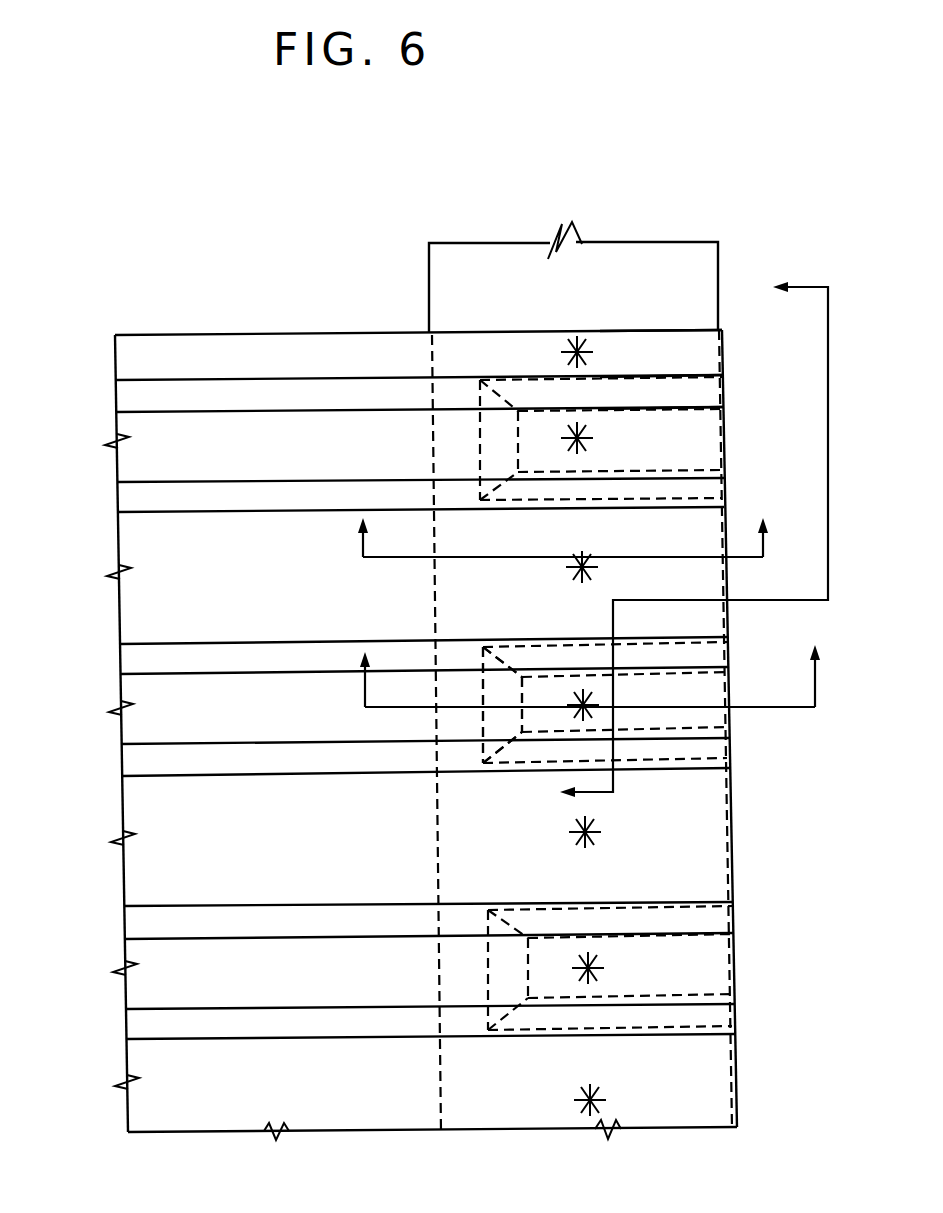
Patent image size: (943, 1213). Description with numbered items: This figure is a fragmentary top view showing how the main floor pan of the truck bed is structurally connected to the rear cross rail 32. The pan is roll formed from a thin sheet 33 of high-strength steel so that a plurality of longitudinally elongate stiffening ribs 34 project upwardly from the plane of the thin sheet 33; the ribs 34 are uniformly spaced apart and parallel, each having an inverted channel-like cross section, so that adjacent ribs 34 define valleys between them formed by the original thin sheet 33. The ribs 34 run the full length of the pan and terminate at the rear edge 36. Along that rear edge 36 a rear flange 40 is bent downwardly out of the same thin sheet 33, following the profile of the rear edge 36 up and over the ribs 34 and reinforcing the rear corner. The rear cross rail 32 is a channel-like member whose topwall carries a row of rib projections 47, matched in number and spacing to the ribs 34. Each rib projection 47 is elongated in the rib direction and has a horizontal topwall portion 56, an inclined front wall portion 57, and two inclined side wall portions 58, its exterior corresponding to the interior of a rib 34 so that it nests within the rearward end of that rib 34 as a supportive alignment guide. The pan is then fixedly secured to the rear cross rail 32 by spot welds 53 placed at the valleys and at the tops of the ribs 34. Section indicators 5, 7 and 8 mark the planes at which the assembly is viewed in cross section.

The section line 5- 5 is at (700, 531).
The section line 7- 7 is at (562, 545).
The section line 8- 8 is at (586, 690).
The rear cross rail 32 is at (489, 243).
The thin sheet 33 is at (139, 593).
The stiffening ribs 34 is at (277, 425).
The rear edge 36 is at (725, 329).
The rear flange 40 is at (725, 408).
The rib projections 47 is at (705, 452).
The spot welds 53 is at (594, 352).
The topwall portion 56 is at (541, 718).
The front wall portion 57 is at (490, 718).
The side wall portions 58 is at (533, 656).